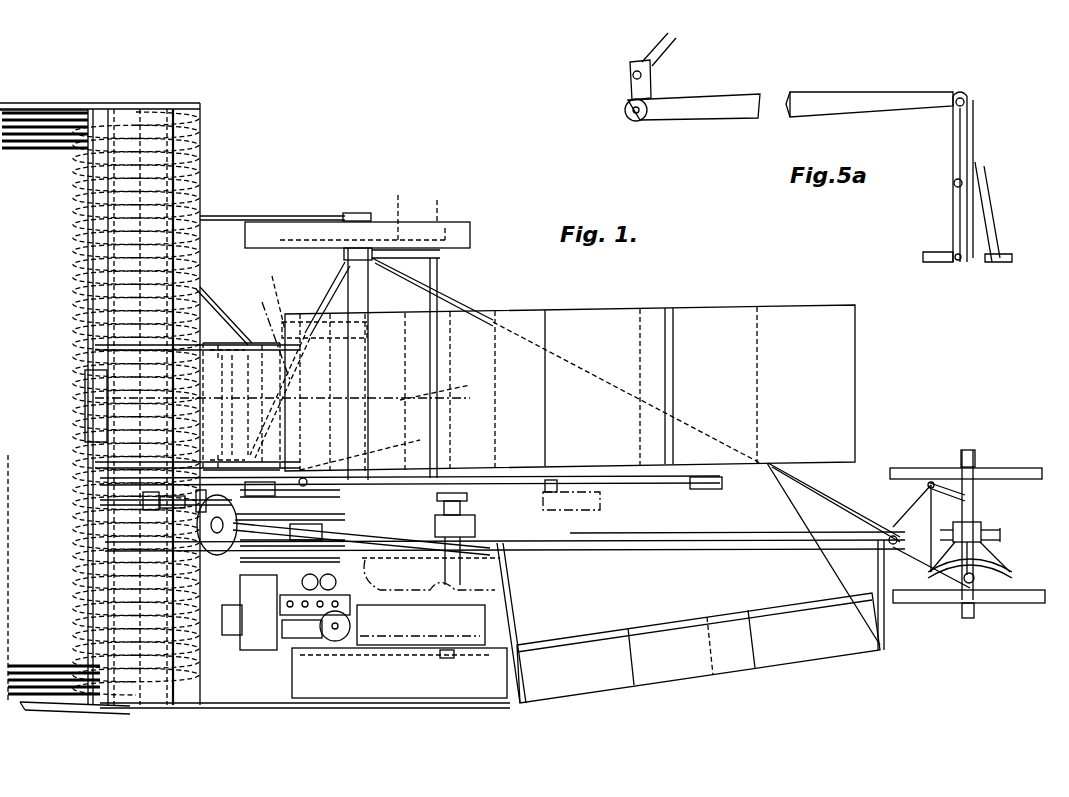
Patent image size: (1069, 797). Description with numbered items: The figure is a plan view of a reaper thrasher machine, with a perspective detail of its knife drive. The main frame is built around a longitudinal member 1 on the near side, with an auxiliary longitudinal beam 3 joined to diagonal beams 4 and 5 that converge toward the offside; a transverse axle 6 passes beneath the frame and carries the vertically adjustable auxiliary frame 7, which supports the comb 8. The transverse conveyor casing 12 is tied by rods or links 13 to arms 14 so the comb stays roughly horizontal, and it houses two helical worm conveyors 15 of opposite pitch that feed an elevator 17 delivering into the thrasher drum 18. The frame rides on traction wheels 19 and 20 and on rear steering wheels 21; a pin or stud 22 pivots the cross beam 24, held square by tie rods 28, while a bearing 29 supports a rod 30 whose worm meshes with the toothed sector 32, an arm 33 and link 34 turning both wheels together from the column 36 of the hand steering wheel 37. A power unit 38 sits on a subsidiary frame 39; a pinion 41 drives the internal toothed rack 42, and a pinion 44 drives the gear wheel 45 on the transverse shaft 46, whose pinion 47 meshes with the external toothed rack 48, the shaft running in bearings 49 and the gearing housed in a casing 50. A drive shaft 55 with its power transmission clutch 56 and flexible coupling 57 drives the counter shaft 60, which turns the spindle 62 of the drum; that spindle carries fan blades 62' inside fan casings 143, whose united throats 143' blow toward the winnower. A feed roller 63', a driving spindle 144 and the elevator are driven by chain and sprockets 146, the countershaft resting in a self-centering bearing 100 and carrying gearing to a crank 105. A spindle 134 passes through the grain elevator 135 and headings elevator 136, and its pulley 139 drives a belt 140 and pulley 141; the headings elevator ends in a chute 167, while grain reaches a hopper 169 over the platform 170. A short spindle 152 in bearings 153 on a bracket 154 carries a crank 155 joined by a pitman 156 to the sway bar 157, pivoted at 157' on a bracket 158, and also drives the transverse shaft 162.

In FIG. 1, the longitudinal member 1 is at (548, 552).
In FIG. 1, the auxiliary longitudinal beam 3 is at (32, 665).
In FIG. 1, the diagonal beam 4 is at (475, 312).
In FIG. 1, the diagonal beam 5 is at (320, 298).
In FIG. 1, the transverse axle 6 is at (360, 298).
In FIG. 1, the vertically adjustable auxiliary frame 7 is at (240, 300).
In FIG. 1, the comb 8 is at (28, 150).
In FIG. 1, the transverse conveyor casing 12 is at (200, 178).
In FIG. 1, the rods or links 13 is at (254, 216).
In FIG. 1, the arms 14 is at (358, 213).
In FIG. 1, the helical worm conveyors 15 is at (205, 140).
In FIG. 1, the elevator 17 is at (232, 411).
In FIG. 1, the thrasher drum 18 is at (570, 388).
In FIG. 1, the near side traction wheel 19 is at (399, 673).
In FIG. 1, the offside traction wheel 20 is at (468, 226).
In FIG. 1, the steering wheels 21 is at (1012, 467).
In FIG. 1, the pin or stud 22 is at (1000, 538).
In FIG. 1, the cross beam 24 is at (975, 505).
In FIG. 1, the tie rods 28 is at (890, 527).
In FIG. 1, the bearing 29 is at (982, 527).
In FIG. 1, the rod 30 is at (690, 533).
In FIG. 1, the toothed sector 32 is at (1012, 570).
In FIG. 1, the arm 33 is at (935, 480).
In FIG. 1, the link 34 is at (905, 490).
In FIG. 1, the column 36 is at (265, 515).
In FIG. 1, the hand steering wheel 37 is at (232, 556).
In FIG. 1, the power unit 38 is at (315, 607).
In FIG. 1, the subsidiary frame 39 is at (458, 708).
In FIG. 1, the pinion 41 is at (450, 658).
In FIG. 1, the internal toothed rack 42 is at (330, 660).
In FIG. 1, the pinion 44 is at (528, 490).
In FIG. 1, the gear wheel 45 is at (450, 457).
In FIG. 1, the transverse shaft 46 is at (430, 305).
In FIG. 1, the pinion 47 is at (440, 200).
In FIG. 1, the external toothed rack 48 is at (401, 201).
In FIG. 1, the bearings 49 is at (440, 256).
In FIG. 1, the casing 50 is at (495, 580).
In FIG. 1, the drive shaft 55 is at (115, 545).
In FIG. 1, the power transmission clutch 56 is at (95, 520).
In FIG. 1, the flexible coupling 57 is at (258, 612).
In FIG. 1, the counter shaft 60 is at (315, 509).
In FIG. 1, the spindle 62 is at (324, 313).
In FIG. 1, the fan blades 62' is at (395, 345).
In FIG. 1, the feed roller 63' is at (265, 341).
In FIG. 1, the self-centering bearing 100 is at (365, 470).
In FIG. 1, the crank 105 is at (585, 503).
In FIG. 1, the spindle 134 is at (437, 500).
In FIG. 1, the grain elevator 135 is at (470, 528).
In FIG. 1, the headings elevator 136 is at (540, 512).
In FIG. 1, the pulley 139 is at (412, 475).
In FIG. 1, the belt 140 is at (514, 478).
In FIG. 1, the pulley 141 is at (718, 486).
In FIG. 1, the fan casings 143 is at (369, 364).
In FIG. 1, the fan throats 143' is at (444, 380).
In FIG. 1, the driving spindle 144 is at (248, 458).
In FIG. 1, the chain and sprockets 146 is at (300, 470).
In FIG. 5a, the short spindle 152 is at (672, 46).
In FIG. 1, the bearings 153 is at (115, 485).
In FIG. 1, the bracket 154 is at (120, 500).
In FIG. 1, the crank 155 is at (118, 490).
In FIG. 5a, the crank 155 is at (655, 82).
In FIG. 1, the pitman 156 is at (118, 605).
In FIG. 5a, the pitman 156 is at (745, 110).
In FIG. 5a, the sway bar 157 is at (936, 177).
In FIG. 5a, the pivot 157' is at (927, 185).
In FIG. 5a, the bracket 158 is at (988, 240).
In FIG. 1, the transverse shaft 162 is at (215, 648).
In FIG. 1, the chute 167 is at (340, 470).
In FIG. 1, the hopper 169 is at (500, 588).
In FIG. 1, the platform 170 is at (708, 583).